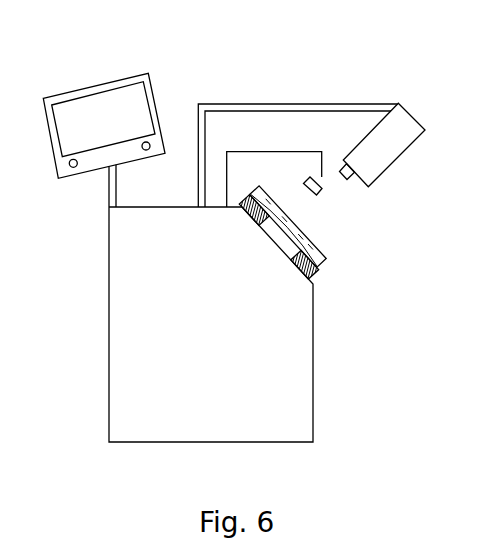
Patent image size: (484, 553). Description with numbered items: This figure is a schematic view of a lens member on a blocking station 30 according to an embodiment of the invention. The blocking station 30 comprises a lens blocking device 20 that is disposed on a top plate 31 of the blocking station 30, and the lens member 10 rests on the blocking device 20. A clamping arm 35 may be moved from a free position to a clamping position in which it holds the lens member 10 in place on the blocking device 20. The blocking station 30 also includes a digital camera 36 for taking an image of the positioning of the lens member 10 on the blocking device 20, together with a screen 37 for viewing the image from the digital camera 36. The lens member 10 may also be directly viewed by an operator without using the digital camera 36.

The lens member 10 is at (322, 252).
The lens blocking device 20 is at (318, 277).
The blocking station 30 is at (242, 78).
The top plate 31 is at (322, 282).
The clamping arm 35 is at (302, 150).
The digital camera 36 is at (400, 142).
The screen 37 is at (93, 112).